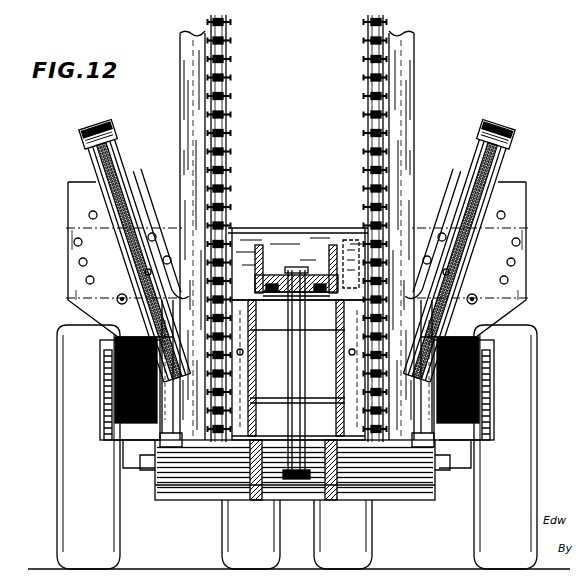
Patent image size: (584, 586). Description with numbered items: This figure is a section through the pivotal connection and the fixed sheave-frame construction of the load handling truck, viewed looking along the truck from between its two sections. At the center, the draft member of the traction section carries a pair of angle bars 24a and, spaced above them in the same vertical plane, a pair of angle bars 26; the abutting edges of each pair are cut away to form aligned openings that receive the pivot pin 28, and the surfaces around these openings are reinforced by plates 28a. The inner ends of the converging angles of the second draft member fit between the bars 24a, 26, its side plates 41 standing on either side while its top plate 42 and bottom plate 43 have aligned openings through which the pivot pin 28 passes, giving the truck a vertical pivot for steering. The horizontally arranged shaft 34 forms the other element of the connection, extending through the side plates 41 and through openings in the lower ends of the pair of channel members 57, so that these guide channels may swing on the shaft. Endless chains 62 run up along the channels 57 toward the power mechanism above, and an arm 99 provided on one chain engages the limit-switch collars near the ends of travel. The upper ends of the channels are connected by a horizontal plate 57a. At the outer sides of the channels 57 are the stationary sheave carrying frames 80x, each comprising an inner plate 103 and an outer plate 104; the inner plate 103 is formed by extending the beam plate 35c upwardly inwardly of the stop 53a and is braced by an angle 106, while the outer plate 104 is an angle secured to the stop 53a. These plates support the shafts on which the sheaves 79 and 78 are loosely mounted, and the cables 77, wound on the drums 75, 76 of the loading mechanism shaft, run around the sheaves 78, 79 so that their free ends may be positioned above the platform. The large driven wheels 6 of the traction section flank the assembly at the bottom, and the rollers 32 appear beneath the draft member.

The channel members 57 is at (183, 97).
The endless chains 62 is at (227, 168).
The sheave 79 is at (90, 155).
The inner plate 103 is at (117, 178).
The sheave carrying frame 80x is at (296, 260).
The angle 106 is at (143, 243).
The cables 77 is at (150, 276).
The outer plate 104 is at (82, 223).
The horizontal plate 57a is at (536, 302).
The wheels 6 is at (66, 330).
The plate 35c is at (170, 330).
The sheave 78 is at (112, 392).
The drum 75 is at (108, 434).
The drum 76 is at (484, 432).
The roller 32 is at (118, 557).
The up-standing portion of angle 53a is at (293, 232).
The angle bars 26 is at (337, 235).
The arm 99 is at (353, 275).
The reinforcing plates 28a is at (280, 278).
The top plate 42 is at (328, 274).
The horizontal shaft 34 is at (268, 397).
The pivot pin 28 is at (289, 350).
The side plates 41 is at (251, 381).
The angle bars 24a is at (256, 501).
The bottom plate 43 is at (340, 447).